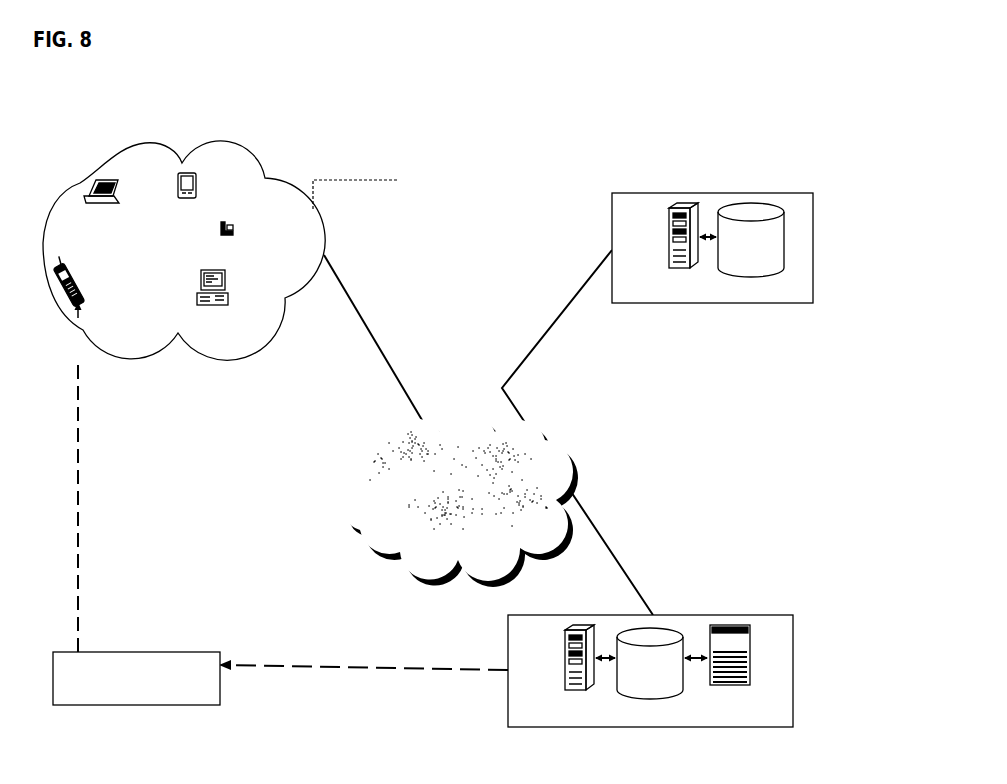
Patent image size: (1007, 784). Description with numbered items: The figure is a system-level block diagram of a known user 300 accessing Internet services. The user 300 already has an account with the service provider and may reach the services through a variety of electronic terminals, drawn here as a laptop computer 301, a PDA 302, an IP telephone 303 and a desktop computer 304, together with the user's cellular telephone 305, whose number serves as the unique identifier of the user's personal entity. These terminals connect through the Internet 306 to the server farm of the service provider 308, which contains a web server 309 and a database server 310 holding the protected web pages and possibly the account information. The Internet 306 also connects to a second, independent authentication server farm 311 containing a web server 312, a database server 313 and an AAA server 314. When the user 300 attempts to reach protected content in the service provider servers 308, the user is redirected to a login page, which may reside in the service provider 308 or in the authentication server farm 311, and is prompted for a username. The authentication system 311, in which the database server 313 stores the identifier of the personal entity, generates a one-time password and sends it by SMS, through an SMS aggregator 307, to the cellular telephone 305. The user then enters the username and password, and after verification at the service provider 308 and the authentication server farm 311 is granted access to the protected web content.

The user 300 is at (245, 250).
The laptop computer 301 is at (115, 188).
The PDA 302 is at (205, 183).
The IP telephone 303 is at (229, 221).
The desktop computer 304 is at (229, 293).
The cellular telephone 305 is at (92, 310).
The Internet 306 is at (410, 500).
The SMS aggregator 307 is at (136, 703).
The service provider server farm 308 is at (729, 224).
The web server 309 is at (678, 247).
The database server 310 is at (767, 253).
The authentication server farm 311 is at (649, 677).
The web server 312 is at (575, 670).
The database server 313 is at (662, 641).
The AAA server 314 is at (738, 668).